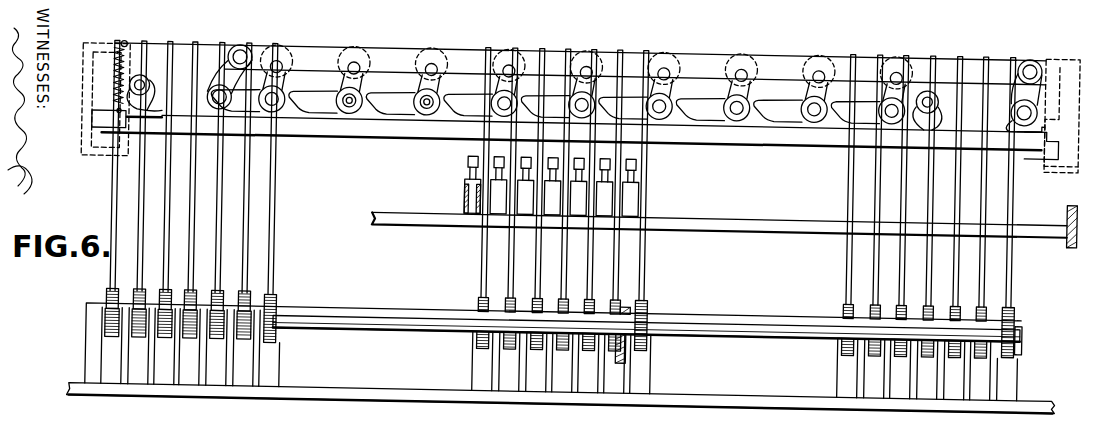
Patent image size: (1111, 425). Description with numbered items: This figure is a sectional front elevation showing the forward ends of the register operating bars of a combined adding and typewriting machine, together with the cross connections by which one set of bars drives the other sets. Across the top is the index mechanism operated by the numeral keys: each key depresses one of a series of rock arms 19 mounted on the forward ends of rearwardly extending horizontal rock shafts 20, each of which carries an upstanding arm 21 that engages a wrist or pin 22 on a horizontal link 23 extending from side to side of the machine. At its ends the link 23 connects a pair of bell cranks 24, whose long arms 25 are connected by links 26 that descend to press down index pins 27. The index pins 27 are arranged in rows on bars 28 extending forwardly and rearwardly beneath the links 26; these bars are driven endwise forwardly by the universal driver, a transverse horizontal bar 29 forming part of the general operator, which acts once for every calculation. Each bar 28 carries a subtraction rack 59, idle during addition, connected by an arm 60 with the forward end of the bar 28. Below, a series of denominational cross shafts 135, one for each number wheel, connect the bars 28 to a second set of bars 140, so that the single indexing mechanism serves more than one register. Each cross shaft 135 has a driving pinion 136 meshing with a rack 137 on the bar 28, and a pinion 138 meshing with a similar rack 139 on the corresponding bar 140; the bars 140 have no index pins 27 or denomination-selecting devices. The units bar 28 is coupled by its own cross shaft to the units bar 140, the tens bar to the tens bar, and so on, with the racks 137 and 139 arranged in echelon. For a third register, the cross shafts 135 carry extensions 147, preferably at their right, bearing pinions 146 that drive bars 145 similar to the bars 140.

The rock arm 19 is at (337, 96).
The rock shaft 20 is at (423, 111).
The upstanding arm 21 is at (417, 86).
The wrist or pin 22 is at (353, 54).
The horizontal link 23 is at (580, 65).
The bell crank 24 is at (236, 74).
The long arm 25 is at (962, 161).
The link 26 is at (572, 134).
The index pin 27 is at (470, 162).
The bar 28 is at (474, 196).
The transverse horizontal bar 29 is at (735, 200).
The subtraction rack 59 is at (617, 52).
The arm 60 is at (641, 156).
The cross shaft 135 is at (358, 336).
The driving pinion 136 is at (628, 360).
The rack 137 is at (643, 297).
The pinion 138 is at (270, 346).
The rack 139 is at (275, 296).
The bar 140 is at (279, 199).
The bar 145 is at (870, 206).
The pinion 146 is at (848, 351).
The extension 147 is at (806, 334).